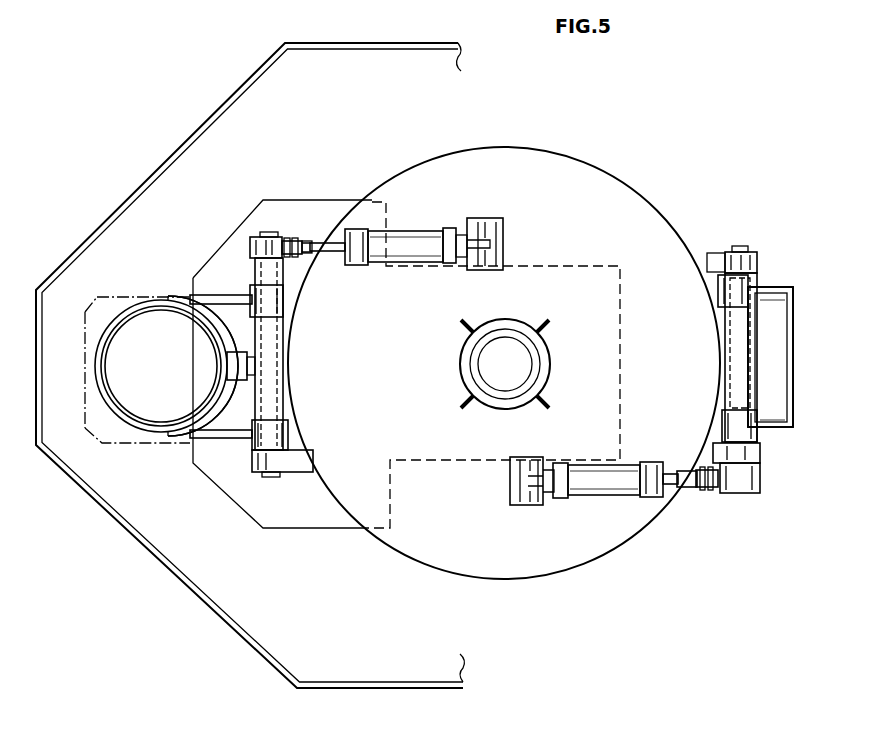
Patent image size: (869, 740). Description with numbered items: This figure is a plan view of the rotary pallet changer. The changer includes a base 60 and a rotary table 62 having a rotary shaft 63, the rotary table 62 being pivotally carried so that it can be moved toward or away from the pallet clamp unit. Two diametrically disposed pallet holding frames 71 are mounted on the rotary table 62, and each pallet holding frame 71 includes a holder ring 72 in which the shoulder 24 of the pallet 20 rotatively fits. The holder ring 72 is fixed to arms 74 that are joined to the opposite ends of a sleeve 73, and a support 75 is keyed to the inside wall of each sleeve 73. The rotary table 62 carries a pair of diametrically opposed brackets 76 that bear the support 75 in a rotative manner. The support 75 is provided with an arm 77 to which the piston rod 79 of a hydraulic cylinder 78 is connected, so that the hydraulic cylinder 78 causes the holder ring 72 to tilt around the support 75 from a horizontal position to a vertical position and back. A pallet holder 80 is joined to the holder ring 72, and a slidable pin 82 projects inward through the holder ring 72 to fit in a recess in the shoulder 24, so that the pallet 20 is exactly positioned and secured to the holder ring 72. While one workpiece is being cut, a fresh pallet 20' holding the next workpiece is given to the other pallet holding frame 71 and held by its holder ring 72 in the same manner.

The pallet 20 is at (788, 357).
The fresh pallet 20' is at (137, 389).
The shoulder 24 is at (98, 368).
The base 60 is at (285, 515).
The rotary table 62 is at (588, 177).
The rotary shaft 63 is at (507, 362).
The pallet holding frame 71 is at (150, 300).
The holder ring 72 is at (100, 297).
The sleeve 73 is at (284, 395).
The arms 74 is at (213, 295).
The support 75 is at (268, 232).
The brackets 76 is at (288, 273).
The arm 77 is at (300, 240).
The hydraulic cylinder 78 is at (415, 233).
The piston rod 79 is at (337, 252).
The pallet holder 80 is at (238, 350).
The slidable pin 82 is at (226, 366).